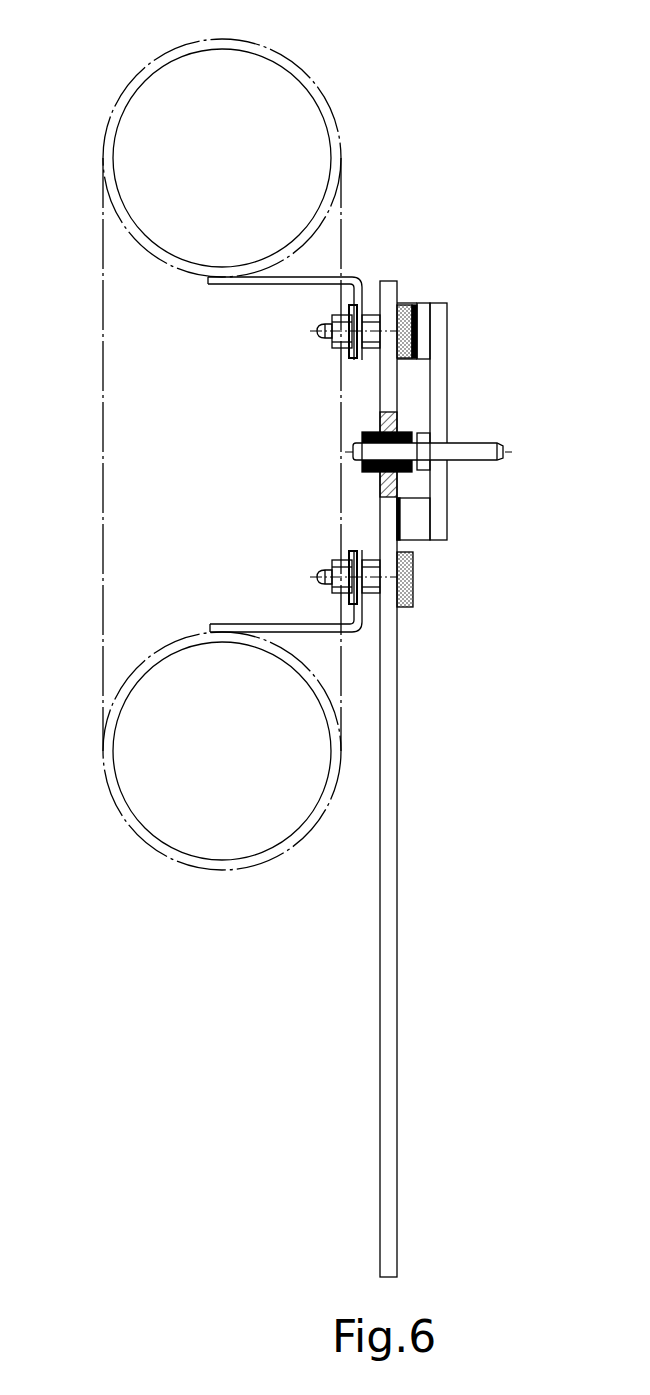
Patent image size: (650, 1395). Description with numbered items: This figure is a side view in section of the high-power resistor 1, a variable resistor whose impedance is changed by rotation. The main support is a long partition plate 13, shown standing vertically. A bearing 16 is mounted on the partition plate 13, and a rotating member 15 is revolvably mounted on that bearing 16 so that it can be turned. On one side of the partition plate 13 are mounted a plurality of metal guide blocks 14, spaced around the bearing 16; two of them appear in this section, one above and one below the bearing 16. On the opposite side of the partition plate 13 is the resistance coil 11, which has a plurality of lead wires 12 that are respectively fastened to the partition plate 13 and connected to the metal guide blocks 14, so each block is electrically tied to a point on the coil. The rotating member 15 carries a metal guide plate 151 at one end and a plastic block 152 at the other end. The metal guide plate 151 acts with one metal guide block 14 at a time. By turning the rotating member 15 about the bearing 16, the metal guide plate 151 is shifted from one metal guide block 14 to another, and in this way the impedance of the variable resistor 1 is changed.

The high-power resistor 1 is at (349, 100).
The resistance coil 11 is at (106, 135).
The lead wires 12 is at (351, 277).
The partition plate 13 is at (393, 860).
The metal guide blocks 14 is at (408, 305).
The rotating member 15 is at (437, 372).
The metal guide plate 151 is at (423, 308).
The plastic block 152 is at (417, 527).
The bearing 16 is at (354, 460).